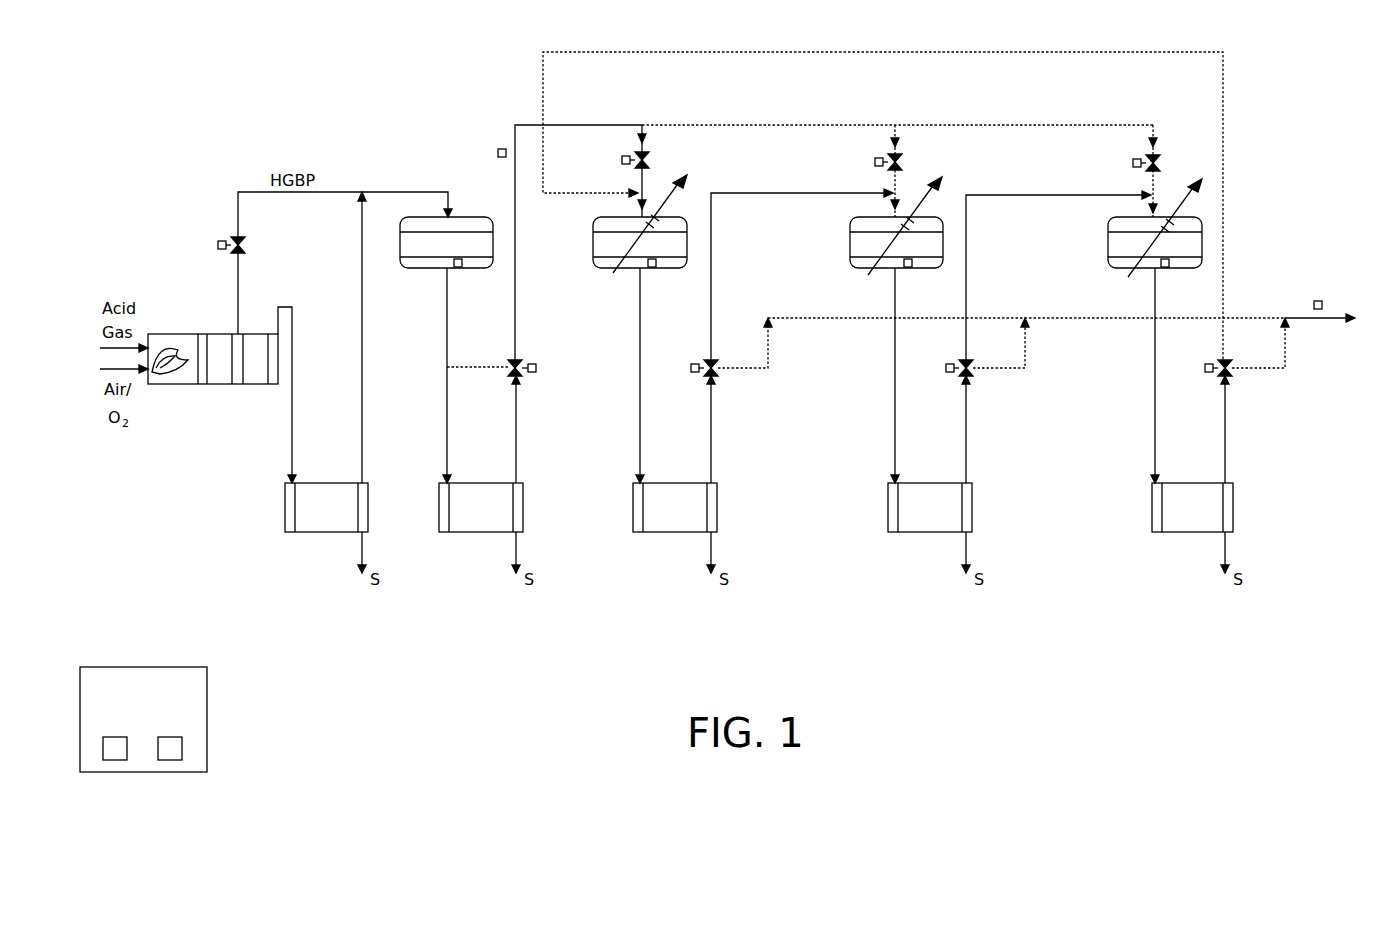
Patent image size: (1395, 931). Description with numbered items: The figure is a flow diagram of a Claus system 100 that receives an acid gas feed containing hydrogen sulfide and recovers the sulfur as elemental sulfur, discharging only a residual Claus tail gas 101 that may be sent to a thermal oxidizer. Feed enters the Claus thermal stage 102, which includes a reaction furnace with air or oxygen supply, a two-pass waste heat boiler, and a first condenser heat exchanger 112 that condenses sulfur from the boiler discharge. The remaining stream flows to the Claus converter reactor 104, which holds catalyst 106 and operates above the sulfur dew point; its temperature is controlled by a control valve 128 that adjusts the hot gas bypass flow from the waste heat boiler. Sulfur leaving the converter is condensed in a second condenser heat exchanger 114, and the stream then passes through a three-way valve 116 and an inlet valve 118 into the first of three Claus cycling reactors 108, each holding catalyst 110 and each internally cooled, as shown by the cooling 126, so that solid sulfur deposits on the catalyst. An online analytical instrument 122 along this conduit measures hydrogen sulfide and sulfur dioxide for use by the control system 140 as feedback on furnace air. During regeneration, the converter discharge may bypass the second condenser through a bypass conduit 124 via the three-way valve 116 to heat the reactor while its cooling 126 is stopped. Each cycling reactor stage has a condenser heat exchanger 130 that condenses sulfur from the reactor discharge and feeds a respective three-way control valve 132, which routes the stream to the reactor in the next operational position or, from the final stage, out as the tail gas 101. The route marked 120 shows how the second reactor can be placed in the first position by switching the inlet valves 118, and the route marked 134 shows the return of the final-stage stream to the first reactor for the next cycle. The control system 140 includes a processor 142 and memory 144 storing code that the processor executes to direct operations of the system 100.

The Claus system 100 is at (766, 700).
The Claus tail gas 101 is at (1305, 320).
The Claus thermal stage 102 is at (163, 480).
The Claus converter reactor 104 is at (430, 269).
The catalyst 106 is at (458, 268).
The Claus cycling reactor 108 is at (593, 240).
The catalyst 110 is at (652, 268).
The first condenser heat exchanger 112 is at (316, 532).
The second condenser heat exchanger 114 is at (482, 532).
The 3-way valve 116 is at (538, 367).
The valve 118 is at (622, 158).
The bypass line to second-position reactor 120 is at (755, 124).
The online analytical instrument 122 is at (502, 149).
The bypass conduit 124 is at (470, 370).
The cooling 126 is at (657, 190).
The control valve 128 is at (220, 241).
The condenser heat exchanger 130 is at (675, 532).
The 3-way control valve 132 is at (718, 375).
The recycle route 134 is at (732, 52).
The control system 140 is at (137, 715).
The processor 142 is at (115, 761).
The memory 144 is at (170, 761).